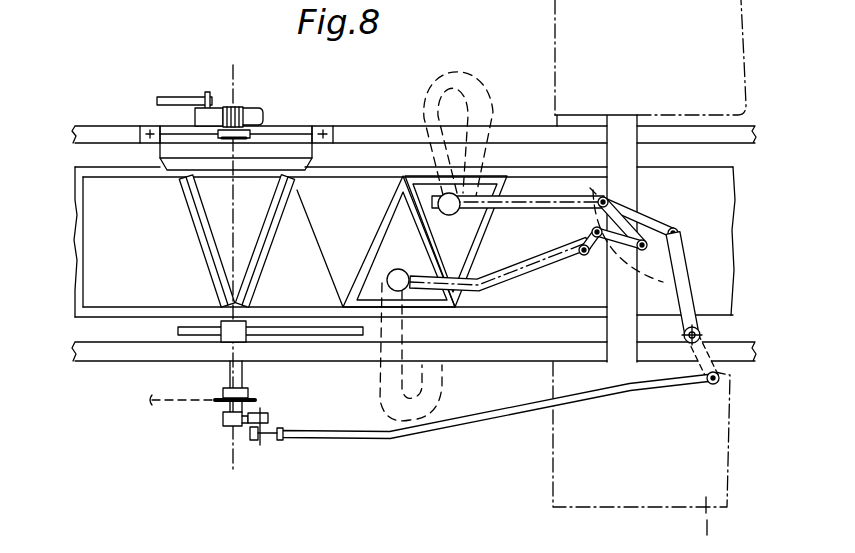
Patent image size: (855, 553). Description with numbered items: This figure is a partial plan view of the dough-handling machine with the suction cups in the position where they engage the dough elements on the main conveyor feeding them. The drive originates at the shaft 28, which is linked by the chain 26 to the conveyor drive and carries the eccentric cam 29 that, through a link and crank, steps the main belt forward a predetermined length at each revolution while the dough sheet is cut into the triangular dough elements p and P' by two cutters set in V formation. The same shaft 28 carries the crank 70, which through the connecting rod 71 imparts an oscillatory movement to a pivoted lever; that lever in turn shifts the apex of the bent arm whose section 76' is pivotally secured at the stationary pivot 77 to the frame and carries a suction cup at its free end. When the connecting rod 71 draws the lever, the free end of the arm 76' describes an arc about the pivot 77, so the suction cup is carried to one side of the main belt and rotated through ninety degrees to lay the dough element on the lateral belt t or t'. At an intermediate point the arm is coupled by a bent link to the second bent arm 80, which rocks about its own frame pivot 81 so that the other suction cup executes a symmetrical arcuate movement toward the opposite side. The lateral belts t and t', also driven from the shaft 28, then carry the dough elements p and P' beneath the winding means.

The chain 26 is at (172, 403).
The shaft 28 is at (228, 424).
The eccentric cam 29 is at (263, 112).
The crank 70 is at (266, 420).
The connecting rod 71 is at (466, 420).
The bent arm section 76' is at (514, 143).
The pivot 77 is at (650, 244).
The bent arm 80 is at (503, 280).
The pivot 81 is at (725, 290).
The lateral conveyor belt t' is at (533, 37).
The lateral conveyor belt t is at (710, 544).
The triangular dough element p is at (392, 247).
The triangular dough element P' is at (451, 245).